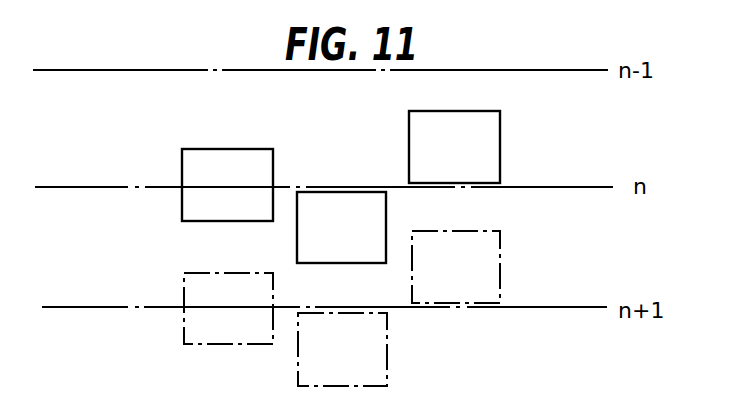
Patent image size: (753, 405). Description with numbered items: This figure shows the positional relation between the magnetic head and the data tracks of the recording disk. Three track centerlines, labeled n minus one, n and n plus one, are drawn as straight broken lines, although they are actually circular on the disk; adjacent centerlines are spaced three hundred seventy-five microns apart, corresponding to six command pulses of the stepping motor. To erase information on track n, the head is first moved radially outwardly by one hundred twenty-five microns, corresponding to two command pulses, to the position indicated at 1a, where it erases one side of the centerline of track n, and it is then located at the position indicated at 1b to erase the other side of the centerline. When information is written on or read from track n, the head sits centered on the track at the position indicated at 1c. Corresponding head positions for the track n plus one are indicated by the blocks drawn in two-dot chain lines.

The magnetic head position (radially outward erase position) 1a is at (500, 153).
The magnetic head position (opposite-side erase position) 1b is at (386, 208).
The magnetic head position (write/read position) 1c is at (273, 161).